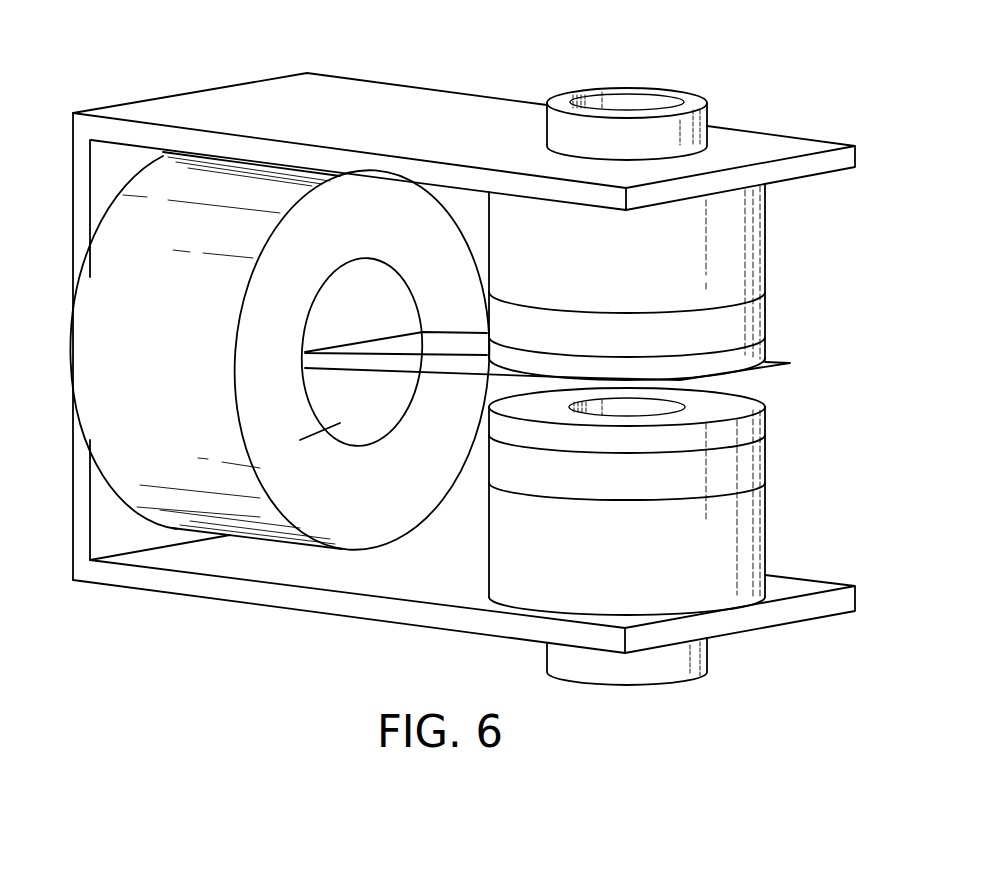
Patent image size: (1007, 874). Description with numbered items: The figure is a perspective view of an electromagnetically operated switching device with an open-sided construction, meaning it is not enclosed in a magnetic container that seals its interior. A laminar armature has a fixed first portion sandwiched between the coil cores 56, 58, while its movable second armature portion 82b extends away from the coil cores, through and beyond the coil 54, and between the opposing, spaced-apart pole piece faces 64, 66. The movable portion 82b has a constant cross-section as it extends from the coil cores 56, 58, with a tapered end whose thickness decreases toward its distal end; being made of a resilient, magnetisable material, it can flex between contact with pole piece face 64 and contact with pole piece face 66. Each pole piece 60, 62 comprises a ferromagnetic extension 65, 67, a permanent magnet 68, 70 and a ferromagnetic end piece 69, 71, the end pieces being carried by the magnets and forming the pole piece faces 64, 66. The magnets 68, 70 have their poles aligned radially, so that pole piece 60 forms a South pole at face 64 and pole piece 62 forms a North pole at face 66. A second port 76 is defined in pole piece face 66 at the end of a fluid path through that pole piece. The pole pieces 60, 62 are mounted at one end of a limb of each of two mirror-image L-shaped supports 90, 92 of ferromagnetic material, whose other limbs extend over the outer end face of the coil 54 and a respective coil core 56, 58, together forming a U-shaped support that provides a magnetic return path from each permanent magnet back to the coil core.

The coil 54 is at (113, 296).
The coil core 56 is at (340, 303).
The coil core 58 is at (340, 423).
The pole piece 60 is at (668, 282).
The pole piece 62 is at (668, 362).
The pole piece face 64 is at (673, 378).
The ferromagnetic extension 65 is at (745, 216).
The pole piece face 66 is at (752, 400).
The ferromagnetic extension 67 is at (757, 570).
The permanent magnet 68 is at (757, 313).
The ferromagnetic end piece 69 is at (762, 353).
The permanent magnet 70 is at (757, 467).
The ferromagnetic end piece 71 is at (757, 428).
The second port 76 is at (627, 412).
The second armature portion 82b is at (385, 348).
The L-shaped support 90 is at (365, 93).
The L-shaped support 92 is at (370, 603).